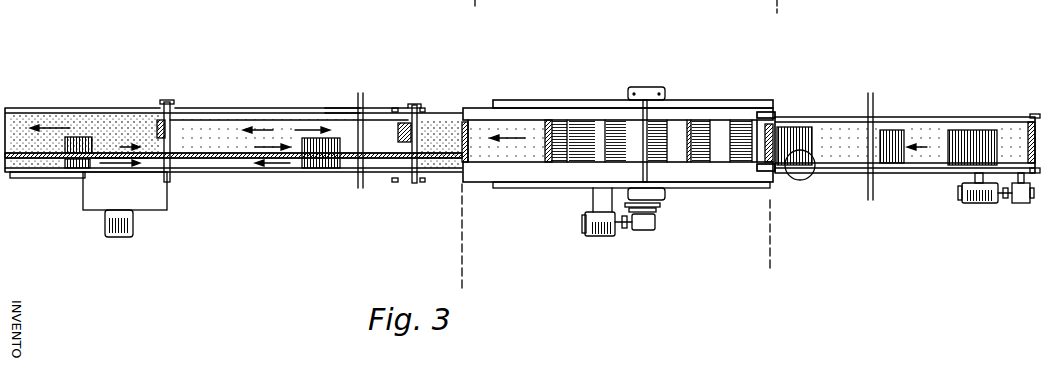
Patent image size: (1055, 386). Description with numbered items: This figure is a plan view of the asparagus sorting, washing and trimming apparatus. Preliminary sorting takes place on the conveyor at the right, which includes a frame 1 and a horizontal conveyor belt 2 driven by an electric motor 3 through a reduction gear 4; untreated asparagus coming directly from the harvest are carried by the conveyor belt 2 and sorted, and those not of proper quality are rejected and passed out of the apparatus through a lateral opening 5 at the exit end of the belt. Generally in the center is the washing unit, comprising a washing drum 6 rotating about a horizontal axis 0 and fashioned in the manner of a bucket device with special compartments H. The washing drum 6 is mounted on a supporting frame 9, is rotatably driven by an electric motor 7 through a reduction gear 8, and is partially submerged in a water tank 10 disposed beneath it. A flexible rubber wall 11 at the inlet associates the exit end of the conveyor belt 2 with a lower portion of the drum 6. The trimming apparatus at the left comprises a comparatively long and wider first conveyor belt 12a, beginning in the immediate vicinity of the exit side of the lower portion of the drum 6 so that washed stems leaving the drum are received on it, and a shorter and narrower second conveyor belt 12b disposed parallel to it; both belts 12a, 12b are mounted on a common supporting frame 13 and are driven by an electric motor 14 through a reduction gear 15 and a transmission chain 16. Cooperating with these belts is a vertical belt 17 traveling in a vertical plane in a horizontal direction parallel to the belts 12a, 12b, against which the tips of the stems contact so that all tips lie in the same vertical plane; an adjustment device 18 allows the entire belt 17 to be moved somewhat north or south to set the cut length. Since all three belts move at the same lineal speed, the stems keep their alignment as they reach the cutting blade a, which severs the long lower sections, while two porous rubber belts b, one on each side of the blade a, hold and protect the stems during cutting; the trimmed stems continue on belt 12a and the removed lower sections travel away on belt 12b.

The cutting blade a is at (135, 148).
The belts b is at (148, 160).
The frame 1 is at (945, 165).
The horizontal conveyor belt 2 is at (850, 140).
The electric motor 3 is at (968, 204).
The reduction gear 4 is at (1022, 204).
The lateral opening 5 is at (803, 165).
The washing drum 6 is at (690, 152).
The electric motor 7 is at (593, 237).
The reduction gear 8 is at (642, 232).
The supporting frame 9 is at (756, 120).
The water tank 10 is at (575, 176).
The flexible rubber wall 11 is at (752, 172).
The first conveyor belt 12a is at (432, 152).
The second conveyor belt 12b is at (285, 170).
The common supporting frame 13 is at (346, 114).
The electric motor 14 is at (108, 234).
The reduction gear 15 is at (155, 202).
The transmission chain 16 is at (45, 179).
The vertical belt 17 is at (280, 127).
The adjustment device 18 is at (170, 118).
The horizontal axis 0 is at (645, 112).
The compartments H is at (656, 150).